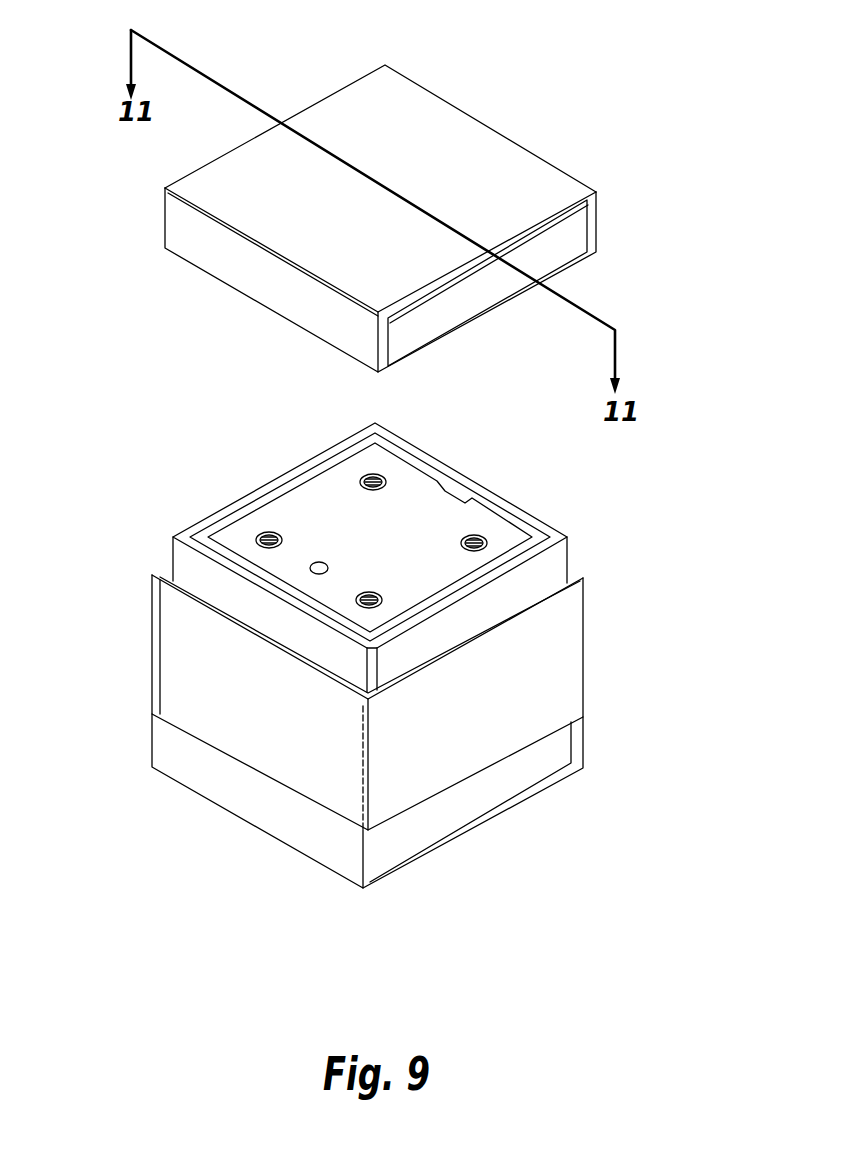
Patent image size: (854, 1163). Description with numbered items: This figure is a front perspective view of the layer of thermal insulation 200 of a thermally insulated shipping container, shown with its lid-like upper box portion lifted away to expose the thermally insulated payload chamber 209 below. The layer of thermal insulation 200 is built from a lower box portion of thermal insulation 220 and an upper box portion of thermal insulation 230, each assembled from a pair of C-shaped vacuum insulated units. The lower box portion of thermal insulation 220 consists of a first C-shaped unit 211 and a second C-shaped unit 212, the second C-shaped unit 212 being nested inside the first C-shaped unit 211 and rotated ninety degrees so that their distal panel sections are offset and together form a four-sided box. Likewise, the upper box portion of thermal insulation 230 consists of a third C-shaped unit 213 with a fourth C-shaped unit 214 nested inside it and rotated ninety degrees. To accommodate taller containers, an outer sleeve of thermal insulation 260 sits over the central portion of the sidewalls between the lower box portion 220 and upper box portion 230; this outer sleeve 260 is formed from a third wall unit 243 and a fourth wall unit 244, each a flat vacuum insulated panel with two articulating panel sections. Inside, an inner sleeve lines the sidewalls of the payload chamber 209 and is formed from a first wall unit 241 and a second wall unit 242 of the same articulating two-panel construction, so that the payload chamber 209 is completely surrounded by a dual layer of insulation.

The layer of thermal insulation 200 is at (623, 84).
The upper box portion of thermal insulation 230 is at (582, 149).
The third C-shaped unit 213 is at (356, 103).
The fourth C-shaped unit 214 is at (560, 256).
The first wall unit 241 is at (193, 530).
The thermally insulated payload chamber 209 is at (291, 516).
The outer sleeve of thermal insulation 260 is at (126, 660).
The second wall unit 242 is at (556, 566).
The third wall unit 243 is at (570, 672).
The fourth wall unit 244 is at (150, 603).
The lower box portion of thermal insulation 220 is at (182, 813).
The first C-shaped unit 211 is at (285, 826).
The second C-shaped unit 212 is at (484, 796).